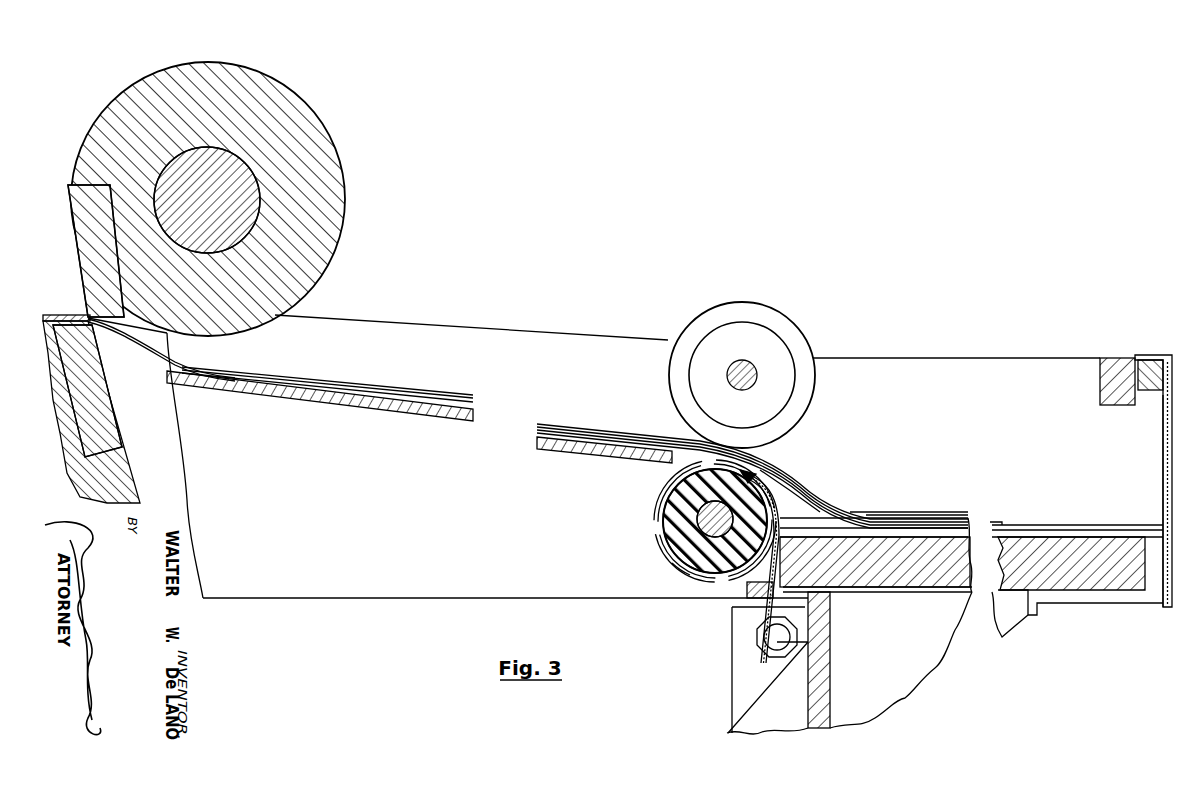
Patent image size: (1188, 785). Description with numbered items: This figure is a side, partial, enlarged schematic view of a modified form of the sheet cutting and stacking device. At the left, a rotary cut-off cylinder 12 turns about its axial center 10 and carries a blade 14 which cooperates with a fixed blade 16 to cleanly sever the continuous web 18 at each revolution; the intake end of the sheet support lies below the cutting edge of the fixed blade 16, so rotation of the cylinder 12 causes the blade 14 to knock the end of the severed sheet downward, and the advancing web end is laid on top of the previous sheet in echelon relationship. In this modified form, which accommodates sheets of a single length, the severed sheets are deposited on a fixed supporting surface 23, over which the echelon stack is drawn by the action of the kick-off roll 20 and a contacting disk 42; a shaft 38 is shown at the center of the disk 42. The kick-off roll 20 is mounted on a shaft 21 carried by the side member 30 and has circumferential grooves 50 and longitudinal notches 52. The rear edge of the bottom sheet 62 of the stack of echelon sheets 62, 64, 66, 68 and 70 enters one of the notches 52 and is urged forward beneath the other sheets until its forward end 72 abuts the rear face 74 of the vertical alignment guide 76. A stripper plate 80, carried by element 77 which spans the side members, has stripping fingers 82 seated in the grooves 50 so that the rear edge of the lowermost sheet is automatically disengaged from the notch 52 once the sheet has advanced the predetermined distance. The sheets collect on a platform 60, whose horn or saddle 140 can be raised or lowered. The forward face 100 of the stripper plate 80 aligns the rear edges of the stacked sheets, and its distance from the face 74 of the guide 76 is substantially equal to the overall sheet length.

The axial center 10 is at (258, 210).
The rotary cut-off cylinder 12 is at (337, 170).
The blade 14 is at (92, 276).
The fixed blade 16 is at (93, 361).
The web 18 is at (72, 317).
The kick-off roller 20 is at (663, 540).
The shaft 21 is at (672, 563).
The fixed supporting surface 23 is at (395, 409).
The side member 30 is at (573, 333).
The shaft 38 is at (737, 362).
The contacting disk 42 is at (795, 334).
The circumferential groove 50 is at (659, 487).
The notch 52 is at (653, 512).
The platform 60 is at (1062, 590).
The bottom sheet 62 is at (828, 513).
The echelon sheet 64 is at (850, 512).
The echelon sheet 66 is at (866, 515).
The echelon sheet 68 is at (803, 487).
The echelon sheet 70 is at (768, 468).
The forward end 72 is at (1115, 524).
The rear face 74 is at (1162, 503).
The vertical alignment guide 76 is at (1163, 445).
The element 77 is at (758, 604).
The stripper plate 80 is at (748, 583).
The stripper finger 82 is at (807, 506).
The forward face 100 is at (832, 592).
The platform horn 140 is at (1012, 630).